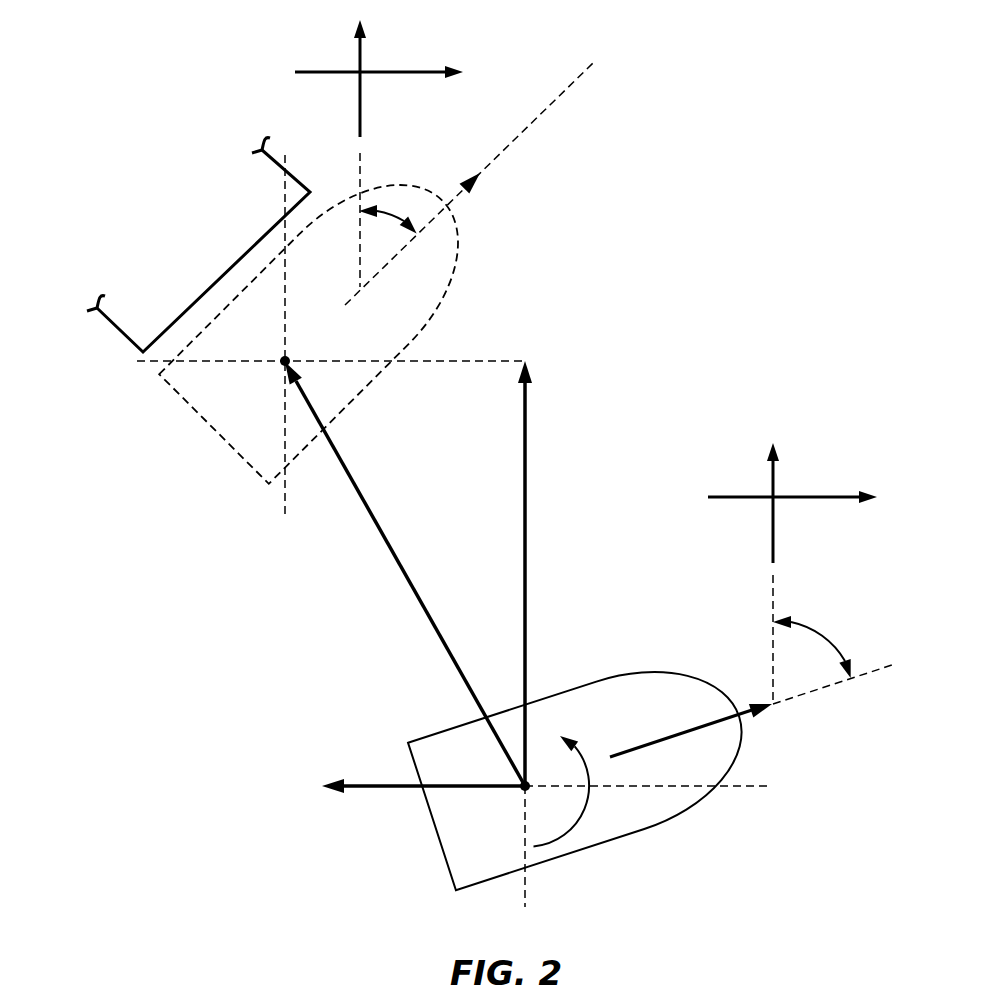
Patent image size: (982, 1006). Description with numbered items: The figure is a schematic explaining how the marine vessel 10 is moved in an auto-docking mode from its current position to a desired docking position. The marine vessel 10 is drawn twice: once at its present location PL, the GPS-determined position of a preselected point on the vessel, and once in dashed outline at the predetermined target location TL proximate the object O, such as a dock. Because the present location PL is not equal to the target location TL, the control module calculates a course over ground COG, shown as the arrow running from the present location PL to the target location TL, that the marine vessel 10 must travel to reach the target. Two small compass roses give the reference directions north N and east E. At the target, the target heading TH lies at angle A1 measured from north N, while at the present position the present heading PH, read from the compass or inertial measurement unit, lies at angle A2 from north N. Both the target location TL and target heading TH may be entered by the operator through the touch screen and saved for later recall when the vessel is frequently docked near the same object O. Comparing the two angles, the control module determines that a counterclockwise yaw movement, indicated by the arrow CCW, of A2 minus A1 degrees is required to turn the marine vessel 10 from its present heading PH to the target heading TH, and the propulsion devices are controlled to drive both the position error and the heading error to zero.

The marine vessel 10 is at (463, 256).
The north N is at (566, 281).
The east E is at (594, 287).
The target heading TH is at (390, 262).
The angle of target heading from north A1 is at (388, 212).
The object O is at (210, 262).
The target location TL is at (282, 363).
The course over ground COG is at (388, 547).
The present location PL is at (524, 797).
The present heading PH is at (695, 728).
The angle of present heading from north A2 is at (818, 631).
The counterclockwise yaw movement arrow CCW is at (575, 820).